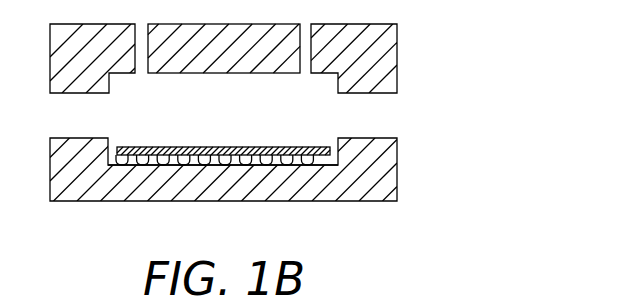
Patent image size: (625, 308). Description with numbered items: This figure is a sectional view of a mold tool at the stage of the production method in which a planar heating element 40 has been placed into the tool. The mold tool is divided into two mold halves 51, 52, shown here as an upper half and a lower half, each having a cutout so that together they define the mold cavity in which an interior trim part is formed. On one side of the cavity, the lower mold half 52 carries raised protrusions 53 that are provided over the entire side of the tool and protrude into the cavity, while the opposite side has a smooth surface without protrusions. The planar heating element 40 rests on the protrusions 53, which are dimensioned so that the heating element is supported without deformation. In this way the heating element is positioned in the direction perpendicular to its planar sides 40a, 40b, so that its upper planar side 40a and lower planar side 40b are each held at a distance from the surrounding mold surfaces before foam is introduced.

The mold half 51 is at (386, 58).
The mold half 52 is at (388, 166).
The protrusions 53 is at (320, 162).
The planar heating element 40 is at (223, 173).
The planar side 40a is at (184, 147).
The planar side 40b is at (204, 166).